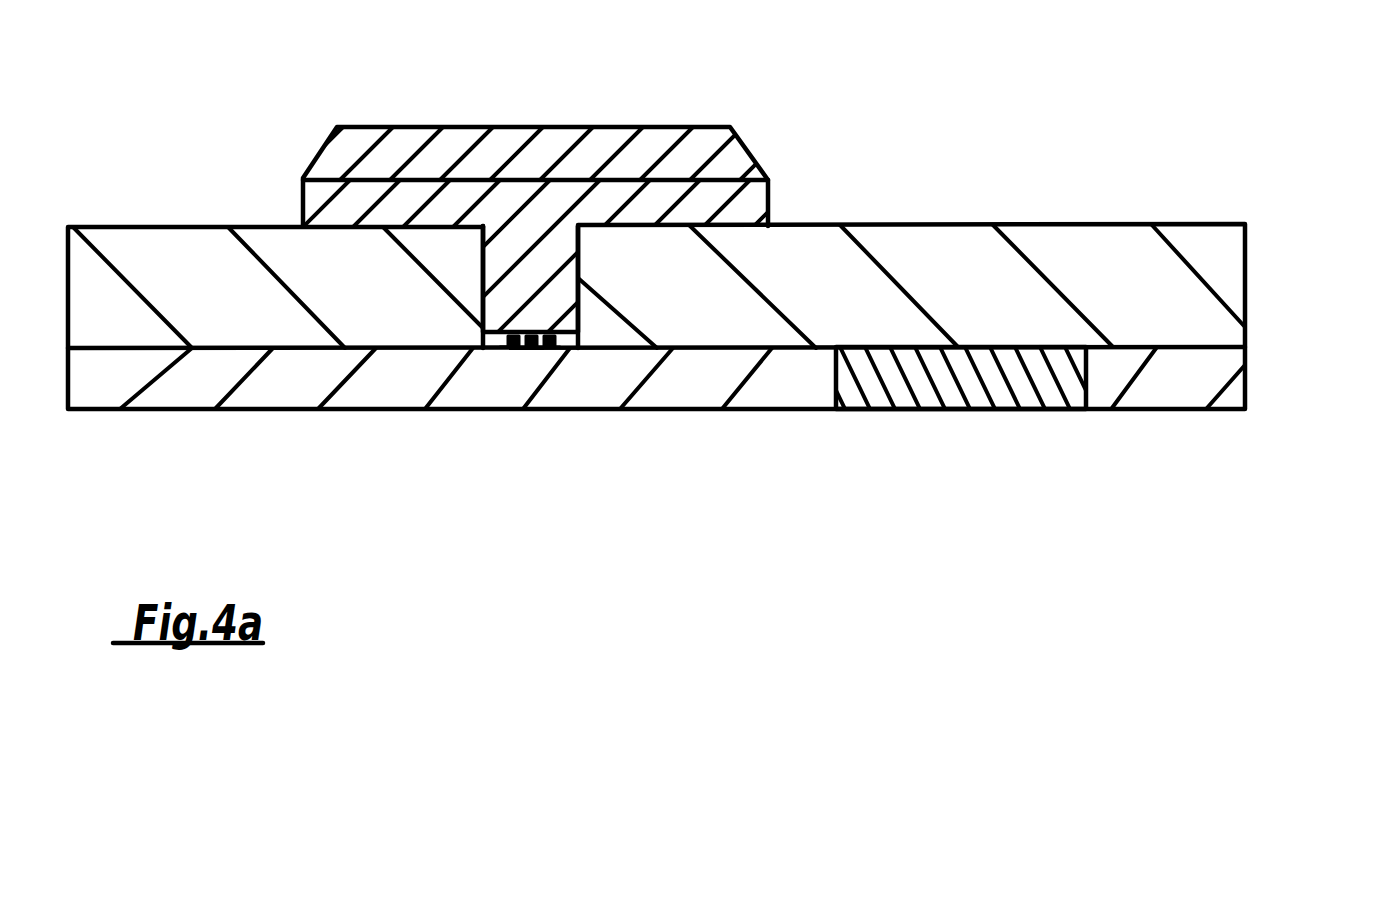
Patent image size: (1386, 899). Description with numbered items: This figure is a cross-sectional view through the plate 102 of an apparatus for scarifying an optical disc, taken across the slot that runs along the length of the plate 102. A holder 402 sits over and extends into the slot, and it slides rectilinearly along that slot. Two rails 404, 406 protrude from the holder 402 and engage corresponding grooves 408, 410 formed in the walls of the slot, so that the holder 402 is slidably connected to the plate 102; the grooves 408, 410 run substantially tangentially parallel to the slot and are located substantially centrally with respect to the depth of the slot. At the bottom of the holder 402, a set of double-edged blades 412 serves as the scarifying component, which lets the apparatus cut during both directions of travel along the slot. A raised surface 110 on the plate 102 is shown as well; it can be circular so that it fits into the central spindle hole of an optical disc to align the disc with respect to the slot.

The plate 102 is at (1117, 247).
The raised surface 110 is at (1020, 387).
The holder 402 is at (757, 203).
The rail 404 is at (480, 280).
The rail 406 is at (583, 288).
The groove 408 is at (460, 303).
The groove 410 is at (593, 293).
The double-edged blades 412 is at (557, 340).